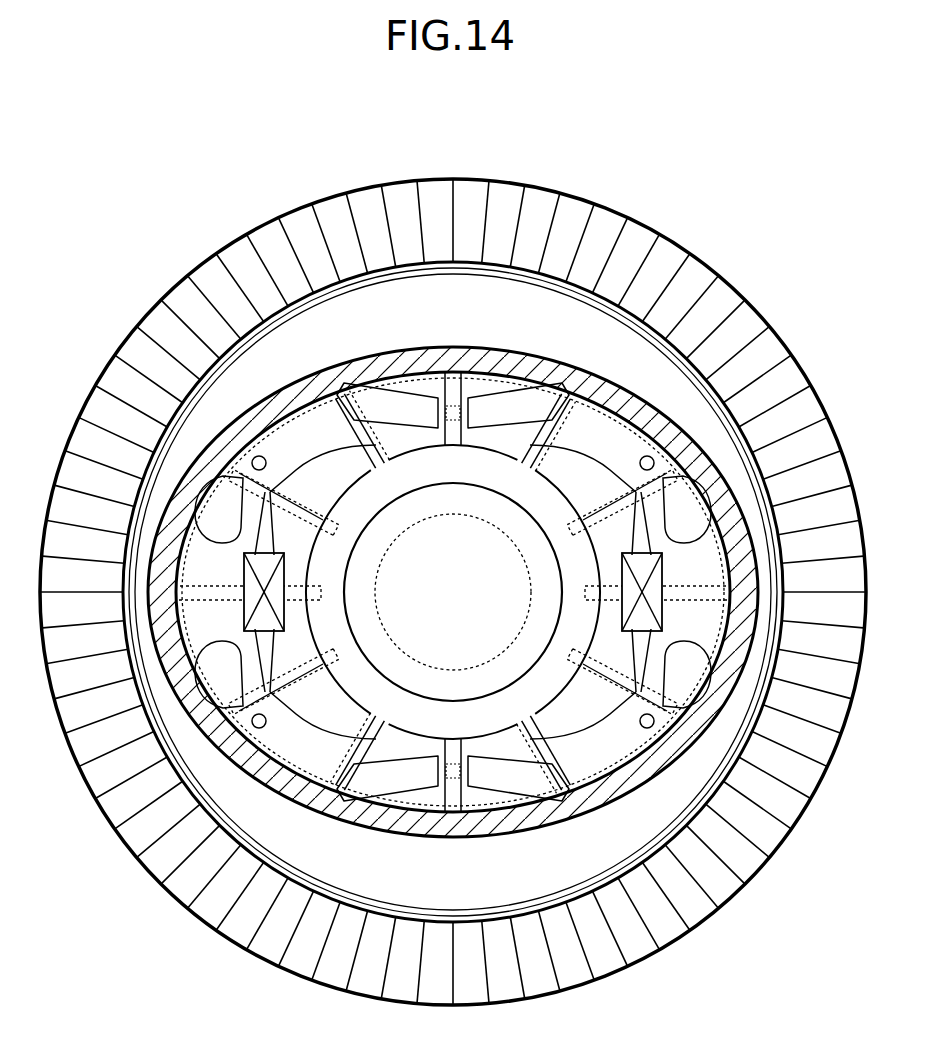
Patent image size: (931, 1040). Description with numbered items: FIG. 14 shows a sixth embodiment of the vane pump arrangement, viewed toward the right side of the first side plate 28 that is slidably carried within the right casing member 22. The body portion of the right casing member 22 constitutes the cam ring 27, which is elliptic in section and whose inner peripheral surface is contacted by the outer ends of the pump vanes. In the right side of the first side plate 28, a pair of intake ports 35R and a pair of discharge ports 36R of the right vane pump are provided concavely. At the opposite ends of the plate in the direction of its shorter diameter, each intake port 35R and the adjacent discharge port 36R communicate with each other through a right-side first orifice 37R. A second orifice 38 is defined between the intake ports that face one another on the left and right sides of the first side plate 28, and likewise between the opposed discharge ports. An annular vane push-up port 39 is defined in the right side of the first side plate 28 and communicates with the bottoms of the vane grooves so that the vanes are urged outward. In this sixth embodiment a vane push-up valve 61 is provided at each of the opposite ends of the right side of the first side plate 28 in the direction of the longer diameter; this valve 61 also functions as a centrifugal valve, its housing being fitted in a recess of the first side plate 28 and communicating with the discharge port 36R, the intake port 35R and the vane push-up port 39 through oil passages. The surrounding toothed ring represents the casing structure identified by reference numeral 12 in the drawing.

The stator 12 is at (512, 200).
The right casing member 22 is at (333, 307).
The cam ring 27 is at (370, 354).
The first side plate 28 is at (352, 817).
The intake port 35R is at (283, 815).
The discharge port 36R is at (553, 843).
The right-side first orifice 37R is at (463, 376).
The second orifice 38 is at (257, 456).
The vane push-up port 39 is at (362, 687).
The vane push-up valve 61 is at (298, 567).